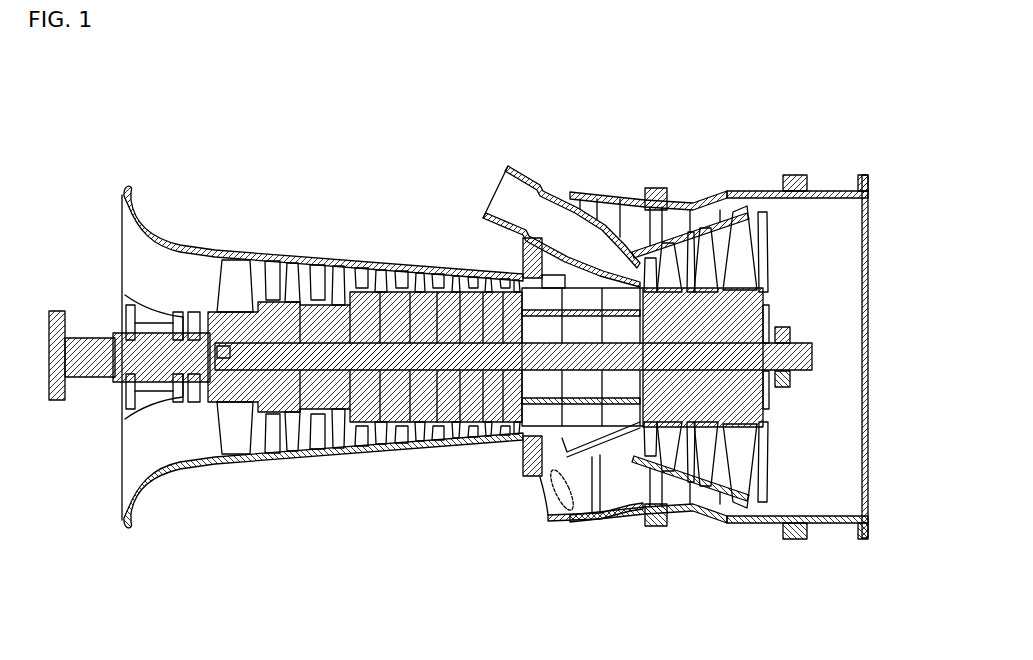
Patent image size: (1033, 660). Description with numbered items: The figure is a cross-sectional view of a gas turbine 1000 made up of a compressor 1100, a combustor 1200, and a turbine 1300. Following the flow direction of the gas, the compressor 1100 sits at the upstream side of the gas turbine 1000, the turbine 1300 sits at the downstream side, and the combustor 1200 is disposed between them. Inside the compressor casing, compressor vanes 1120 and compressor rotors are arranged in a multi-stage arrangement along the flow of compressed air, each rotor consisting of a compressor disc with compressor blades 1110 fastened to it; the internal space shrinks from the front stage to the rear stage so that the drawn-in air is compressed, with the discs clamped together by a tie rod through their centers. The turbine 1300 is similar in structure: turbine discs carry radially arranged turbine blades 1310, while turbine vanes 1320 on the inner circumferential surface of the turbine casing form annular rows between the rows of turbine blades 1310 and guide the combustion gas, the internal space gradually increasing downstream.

The gas turbine 1000 is at (150, 91).
The compressor 1100 is at (257, 249).
The compressor blades 1110 is at (234, 446).
The compressor vanes 1120 is at (292, 452).
The combustor 1200 is at (524, 165).
The turbine 1300 is at (768, 237).
The turbine blades 1310 is at (747, 462).
The turbine vanes 1320 is at (722, 475).